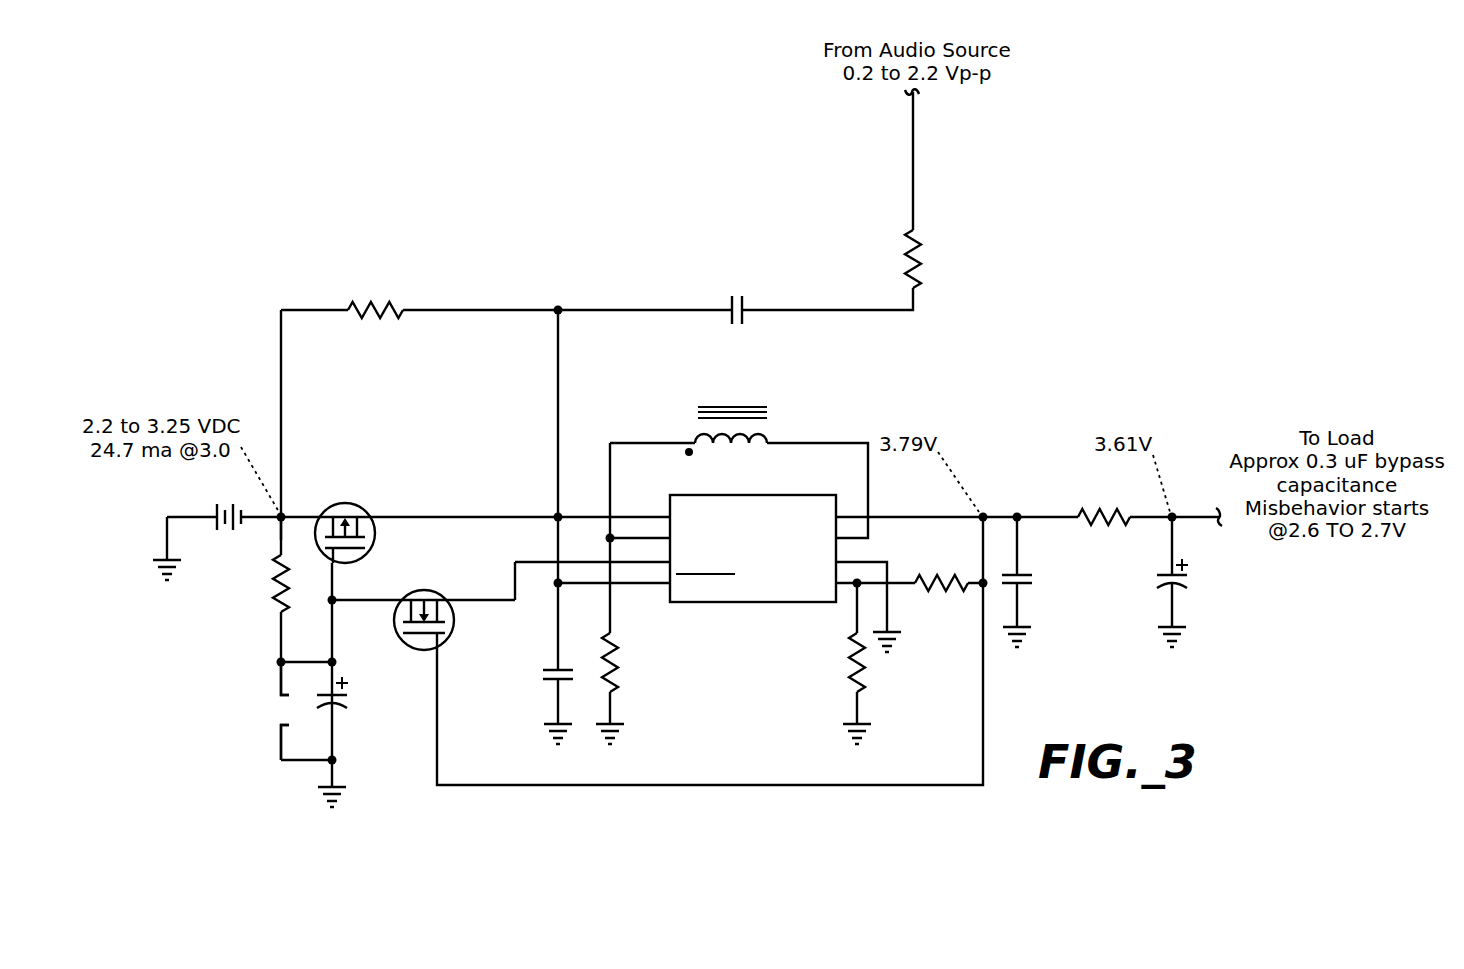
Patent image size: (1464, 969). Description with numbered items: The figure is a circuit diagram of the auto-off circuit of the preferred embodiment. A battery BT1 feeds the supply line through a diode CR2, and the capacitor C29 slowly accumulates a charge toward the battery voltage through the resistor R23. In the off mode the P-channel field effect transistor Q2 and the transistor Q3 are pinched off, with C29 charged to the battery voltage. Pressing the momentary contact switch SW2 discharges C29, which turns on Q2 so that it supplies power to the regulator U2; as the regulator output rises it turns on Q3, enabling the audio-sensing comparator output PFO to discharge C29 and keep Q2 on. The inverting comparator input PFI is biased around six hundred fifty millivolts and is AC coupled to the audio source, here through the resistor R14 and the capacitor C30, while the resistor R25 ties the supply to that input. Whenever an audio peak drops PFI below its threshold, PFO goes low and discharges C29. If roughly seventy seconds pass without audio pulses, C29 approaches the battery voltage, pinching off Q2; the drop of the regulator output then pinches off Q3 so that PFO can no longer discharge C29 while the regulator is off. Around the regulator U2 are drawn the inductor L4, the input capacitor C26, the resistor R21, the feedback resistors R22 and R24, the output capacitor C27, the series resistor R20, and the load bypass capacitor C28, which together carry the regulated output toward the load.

The battery BT1 is at (229, 504).
The diode CR2 is at (245, 536).
The resistor R23 is at (252, 584).
The momentary contact switch SW2 is at (253, 711).
The capacitor C29 is at (361, 706).
The P-channel field effect transistor Q2 is at (347, 508).
The transistor Q3 is at (432, 594).
The resistor R25 3.3M R25 is at (375, 311).
The capacitor C30 .1uF C30 is at (738, 311).
The resistor R14 47K R14 is at (890, 259).
The inductor L4 47uH Coilcraft D91608C-473 L4 is at (850, 423).
The regulator U2 is at (752, 549).
The capacitor C26 10uF C26 is at (529, 678).
The resistor R21 1.10M R21 is at (647, 664).
The resistor R24 1M R24 is at (832, 664).
The resistor R22 2M R22 is at (941, 582).
The capacitor C27 10uF C27 is at (1042, 577).
The resistor R20 10 R20 is at (1104, 511).
The capacitor C28 47uF 6V C28 is at (1214, 577).